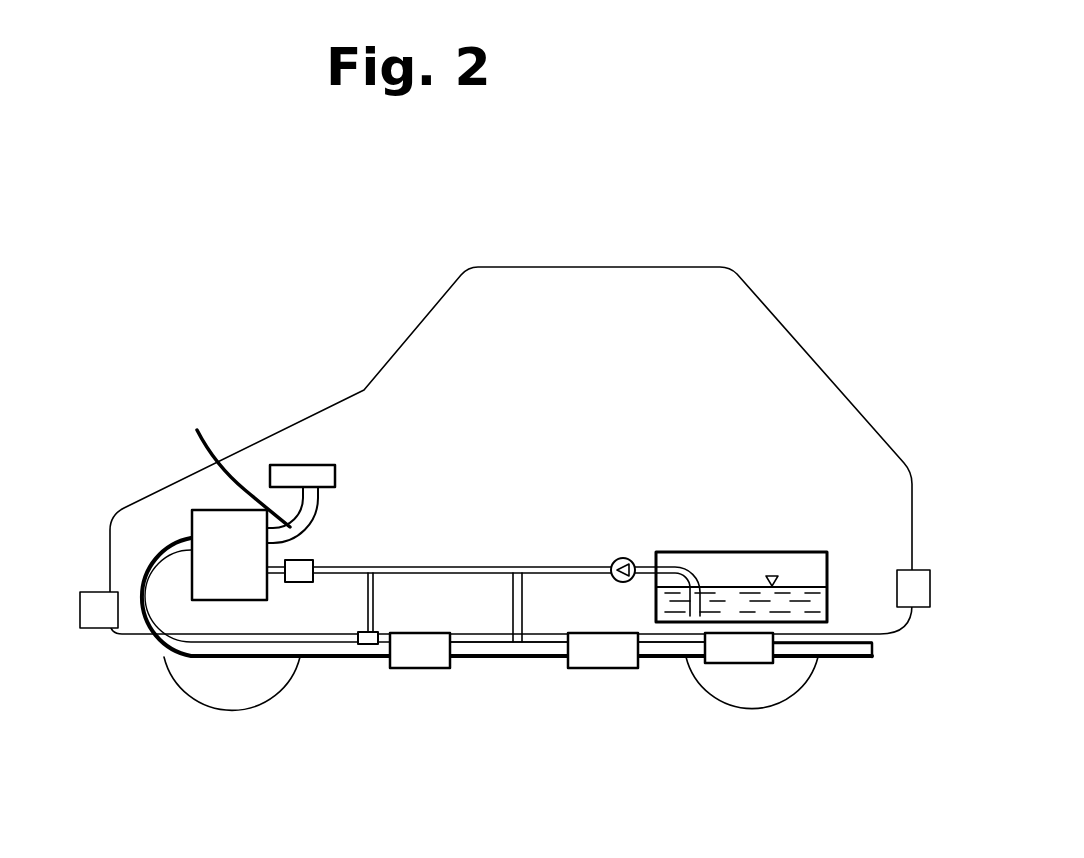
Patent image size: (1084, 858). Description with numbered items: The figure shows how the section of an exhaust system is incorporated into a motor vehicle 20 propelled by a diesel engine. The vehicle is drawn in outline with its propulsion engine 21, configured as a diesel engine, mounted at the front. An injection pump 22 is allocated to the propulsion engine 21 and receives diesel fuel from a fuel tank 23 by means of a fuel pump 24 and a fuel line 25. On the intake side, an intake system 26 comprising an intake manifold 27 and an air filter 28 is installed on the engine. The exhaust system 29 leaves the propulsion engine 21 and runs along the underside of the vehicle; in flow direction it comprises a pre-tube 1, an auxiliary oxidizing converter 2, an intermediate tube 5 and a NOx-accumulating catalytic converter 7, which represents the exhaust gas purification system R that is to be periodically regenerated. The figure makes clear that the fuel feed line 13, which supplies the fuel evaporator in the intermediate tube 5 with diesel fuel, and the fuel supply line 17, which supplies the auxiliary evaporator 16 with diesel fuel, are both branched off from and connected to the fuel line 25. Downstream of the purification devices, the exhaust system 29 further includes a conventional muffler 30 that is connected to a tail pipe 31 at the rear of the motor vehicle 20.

The pre-tube 1 is at (275, 650).
The auxiliary oxidizing converter 2 is at (418, 653).
The intermediate tube 5 is at (533, 650).
The NOx-accumulating catalytic converter 7 is at (622, 657).
The fuel feed line 13 is at (520, 607).
The auxiliary evaporator 16 is at (366, 648).
The fuel supply line 17 is at (370, 600).
The motor vehicle 20 is at (697, 250).
The propulsion engine 21 is at (207, 530).
The injection pump 22 is at (300, 568).
The fuel tank 23 is at (760, 552).
The fuel pump 24 is at (623, 557).
The fuel line 25 is at (458, 567).
The intake system 26 is at (321, 448).
The intake manifold 27 is at (231, 460).
The air filter 28 is at (285, 470).
The exhaust system 29 is at (140, 660).
The muffler 30 is at (752, 655).
The tail pipe 31 is at (860, 652).
The exhaust gas purification system R is at (598, 692).